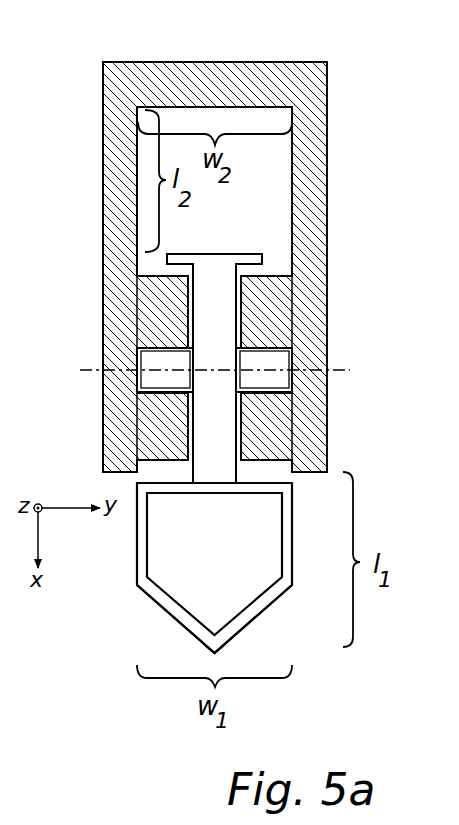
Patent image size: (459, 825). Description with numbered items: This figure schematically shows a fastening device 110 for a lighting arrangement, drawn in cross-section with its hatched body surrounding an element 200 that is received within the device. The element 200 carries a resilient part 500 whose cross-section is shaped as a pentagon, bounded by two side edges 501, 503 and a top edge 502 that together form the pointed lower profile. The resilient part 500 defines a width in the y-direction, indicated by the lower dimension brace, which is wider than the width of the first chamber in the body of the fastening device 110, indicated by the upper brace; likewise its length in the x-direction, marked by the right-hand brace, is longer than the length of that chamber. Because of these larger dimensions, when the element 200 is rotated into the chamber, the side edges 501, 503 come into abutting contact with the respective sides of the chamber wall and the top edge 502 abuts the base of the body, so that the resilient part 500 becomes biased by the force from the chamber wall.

The fastening device 110 is at (339, 59).
The element 200 is at (233, 420).
The resilient part 500 is at (292, 535).
The side edge 501 is at (137, 585).
The top edge 502 is at (215, 652).
The side edge 503 is at (292, 585).